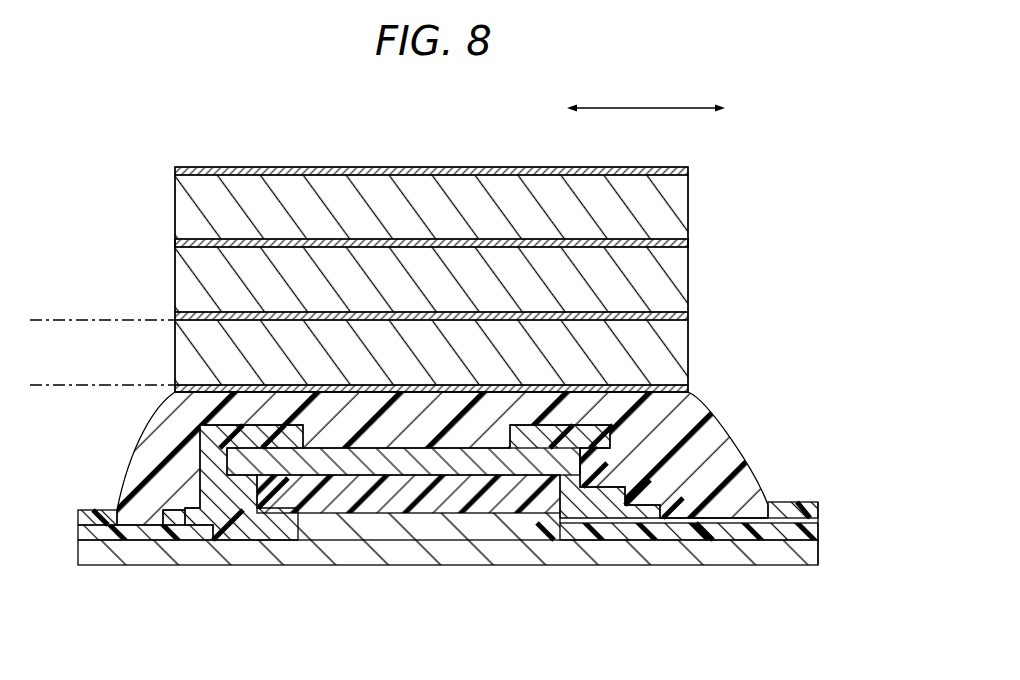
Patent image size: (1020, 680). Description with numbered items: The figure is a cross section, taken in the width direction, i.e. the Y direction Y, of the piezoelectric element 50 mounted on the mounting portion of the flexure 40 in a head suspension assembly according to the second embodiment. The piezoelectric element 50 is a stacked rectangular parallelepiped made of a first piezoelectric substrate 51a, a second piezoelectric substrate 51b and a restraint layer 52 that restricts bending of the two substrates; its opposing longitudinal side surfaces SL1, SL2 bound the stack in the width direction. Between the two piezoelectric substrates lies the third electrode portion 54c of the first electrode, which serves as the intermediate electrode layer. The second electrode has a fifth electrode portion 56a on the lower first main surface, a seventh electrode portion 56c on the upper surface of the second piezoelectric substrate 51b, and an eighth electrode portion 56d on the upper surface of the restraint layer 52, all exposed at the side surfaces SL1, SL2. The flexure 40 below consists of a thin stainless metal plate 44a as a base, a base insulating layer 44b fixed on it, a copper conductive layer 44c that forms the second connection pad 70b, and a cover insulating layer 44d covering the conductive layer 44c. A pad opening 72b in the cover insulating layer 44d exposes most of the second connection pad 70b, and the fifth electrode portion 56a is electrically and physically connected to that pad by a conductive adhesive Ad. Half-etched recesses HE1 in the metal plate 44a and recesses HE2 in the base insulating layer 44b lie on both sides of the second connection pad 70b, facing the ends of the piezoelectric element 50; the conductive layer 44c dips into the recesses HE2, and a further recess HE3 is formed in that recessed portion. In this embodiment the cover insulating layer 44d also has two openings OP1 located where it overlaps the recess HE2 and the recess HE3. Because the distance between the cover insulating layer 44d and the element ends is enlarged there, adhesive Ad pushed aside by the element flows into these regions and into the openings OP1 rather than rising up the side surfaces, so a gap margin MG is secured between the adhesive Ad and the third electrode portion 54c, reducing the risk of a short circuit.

The piezoelectric element 50 is at (266, 150).
The restraint layer 52 is at (679, 191).
The first piezoelectric substrate 51a is at (680, 356).
The second piezoelectric substrate 51b is at (680, 288).
The third electrode portion 54c is at (200, 316).
The fifth electrode portion 56a is at (190, 394).
The seventh electrode portion 56c is at (386, 243).
The eighth electrode portion 56d is at (478, 170).
The side surface SL1 is at (690, 244).
The side surface SL2 is at (175, 247).
The gap margin MG is at (98, 323).
The Y direction Y is at (646, 95).
The conductive adhesive Ad is at (712, 437).
The flexure 40 is at (218, 584).
The metal plate 44a is at (380, 537).
The base insulating layer 44b is at (433, 492).
The conductive layer 44c is at (605, 505).
The cover insulating layer 44d is at (783, 503).
The second connection pad 70b is at (492, 467).
The opening 72b is at (300, 428).
The recess HE1 is at (247, 541).
The recess HE2 is at (178, 530).
The recess HE3 is at (705, 541).
The opening OP1 is at (116, 512).